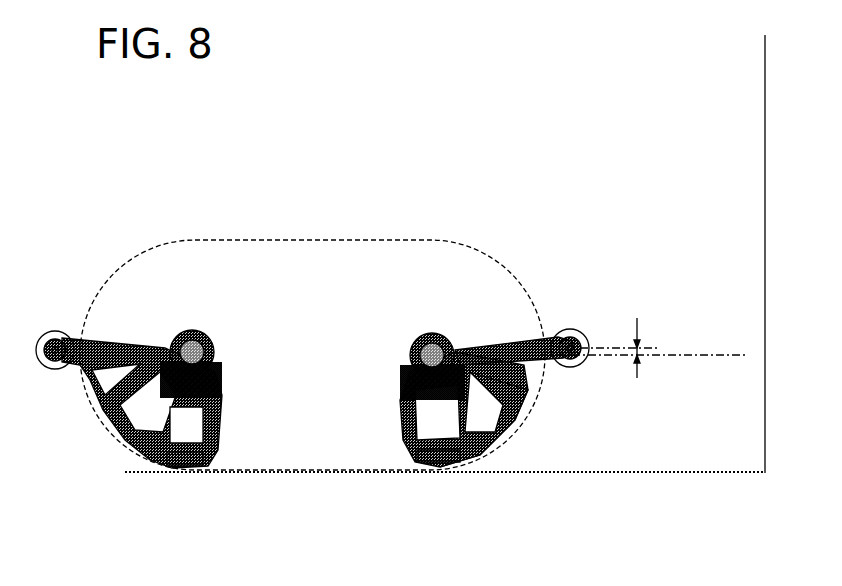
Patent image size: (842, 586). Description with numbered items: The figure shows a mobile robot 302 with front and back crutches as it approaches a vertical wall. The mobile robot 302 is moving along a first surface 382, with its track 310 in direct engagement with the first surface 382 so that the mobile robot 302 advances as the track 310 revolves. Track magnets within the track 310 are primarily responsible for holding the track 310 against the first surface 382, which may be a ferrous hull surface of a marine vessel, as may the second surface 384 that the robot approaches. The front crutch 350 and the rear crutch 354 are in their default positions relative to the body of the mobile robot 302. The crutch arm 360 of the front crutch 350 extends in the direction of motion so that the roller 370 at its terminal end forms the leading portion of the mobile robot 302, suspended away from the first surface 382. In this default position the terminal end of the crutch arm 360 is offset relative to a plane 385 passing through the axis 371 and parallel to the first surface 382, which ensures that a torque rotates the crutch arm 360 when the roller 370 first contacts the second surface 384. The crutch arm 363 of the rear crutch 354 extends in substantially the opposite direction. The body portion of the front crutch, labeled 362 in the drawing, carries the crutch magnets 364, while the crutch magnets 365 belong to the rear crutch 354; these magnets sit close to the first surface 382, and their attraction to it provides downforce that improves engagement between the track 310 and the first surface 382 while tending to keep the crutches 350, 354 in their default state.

The mobile robot 302 is at (363, 180).
The track 310 is at (478, 250).
The crutch 350 is at (493, 356).
The rear crutch 354 is at (122, 355).
The crutch arm 360 is at (562, 360).
The bracket body 362 is at (473, 452).
The crutch arm 363 is at (72, 347).
The crutch magnets 364 is at (510, 428).
The crutch magnets 365 is at (188, 455).
The roller 370 is at (578, 330).
The axis 371 is at (431, 354).
The first surface 382 is at (698, 462).
The second surface 384 is at (758, 141).
The plane 385 is at (703, 352).